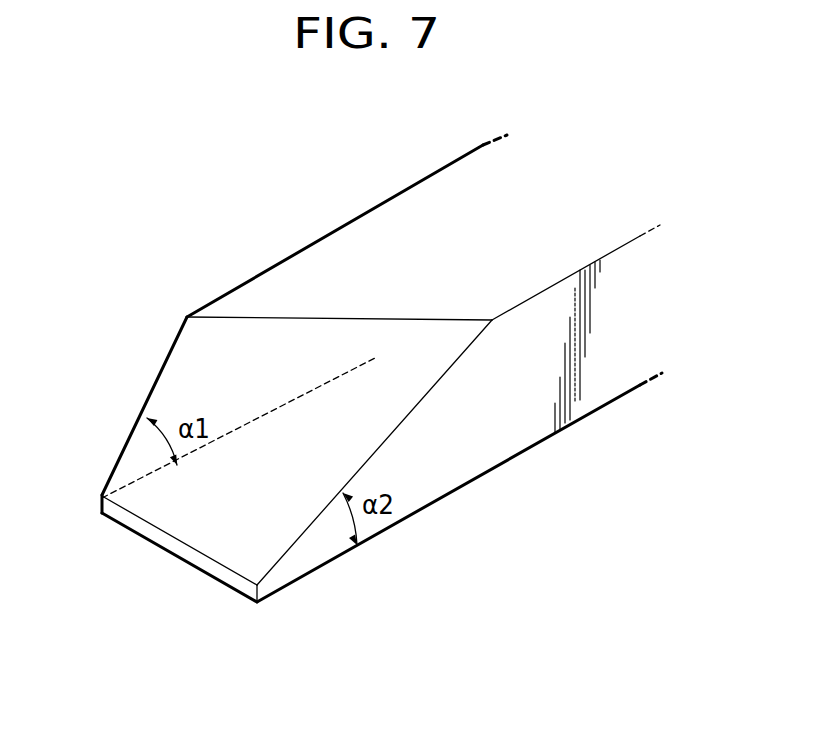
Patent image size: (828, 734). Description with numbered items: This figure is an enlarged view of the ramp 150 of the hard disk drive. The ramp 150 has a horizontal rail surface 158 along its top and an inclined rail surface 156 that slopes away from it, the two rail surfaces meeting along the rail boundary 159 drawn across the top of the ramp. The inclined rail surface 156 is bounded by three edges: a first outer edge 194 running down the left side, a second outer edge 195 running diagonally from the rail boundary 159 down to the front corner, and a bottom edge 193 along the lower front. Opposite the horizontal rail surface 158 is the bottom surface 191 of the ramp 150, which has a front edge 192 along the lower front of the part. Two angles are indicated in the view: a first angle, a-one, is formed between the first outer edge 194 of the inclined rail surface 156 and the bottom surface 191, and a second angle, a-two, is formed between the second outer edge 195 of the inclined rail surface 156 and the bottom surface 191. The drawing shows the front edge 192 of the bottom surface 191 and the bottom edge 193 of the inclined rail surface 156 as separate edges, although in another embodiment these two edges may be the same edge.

The ramp 150 is at (148, 260).
The inclined rail surface 156 is at (203, 370).
The horizontal rail surface 158 is at (350, 252).
The rail boundary 159 is at (247, 320).
The bottom surface 191 is at (492, 472).
The front edge 192 is at (200, 568).
The bottom edge 193 is at (183, 542).
The first outer edge 194 is at (127, 442).
The second outer edge 195 is at (400, 423).